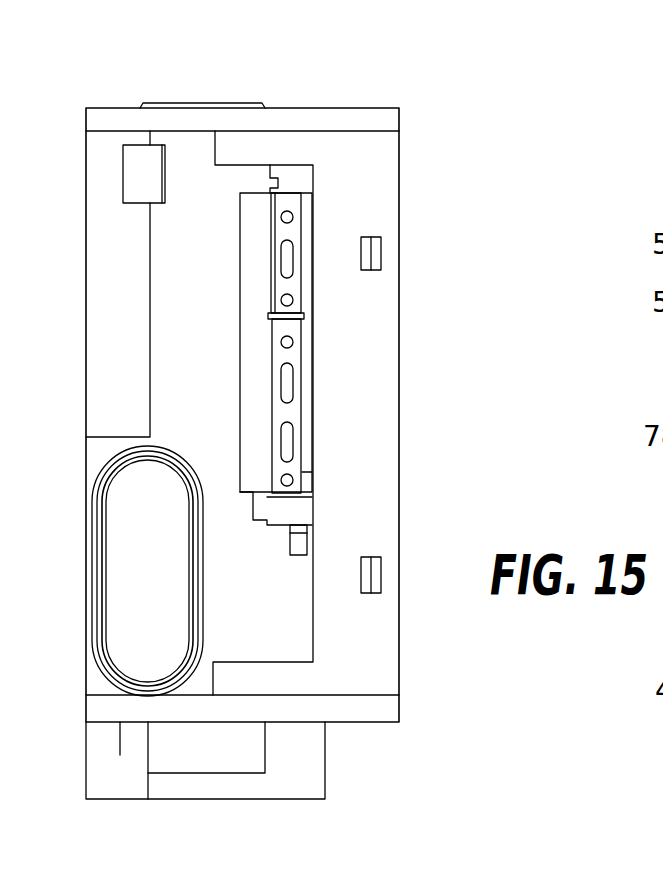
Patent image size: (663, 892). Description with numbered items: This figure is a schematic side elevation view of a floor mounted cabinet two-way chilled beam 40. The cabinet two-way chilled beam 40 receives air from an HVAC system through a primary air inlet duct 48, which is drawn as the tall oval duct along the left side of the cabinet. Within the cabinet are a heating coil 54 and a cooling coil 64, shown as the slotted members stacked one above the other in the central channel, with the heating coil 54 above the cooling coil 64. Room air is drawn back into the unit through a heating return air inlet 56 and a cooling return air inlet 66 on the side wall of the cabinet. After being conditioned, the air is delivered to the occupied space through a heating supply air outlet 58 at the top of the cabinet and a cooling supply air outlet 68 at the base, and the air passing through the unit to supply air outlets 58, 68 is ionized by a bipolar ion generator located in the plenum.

The cabinet two-way chilled beam 40 is at (385, 92).
The primary air inlet duct 48 is at (92, 637).
The heating coil 54 is at (292, 226).
The heating return air inlet 56 is at (400, 267).
The heating supply air outlet 58 is at (207, 102).
The cooling coil 64 is at (292, 383).
The cooling return air inlet 66 is at (400, 475).
The cooling supply air outlet 68 is at (360, 722).